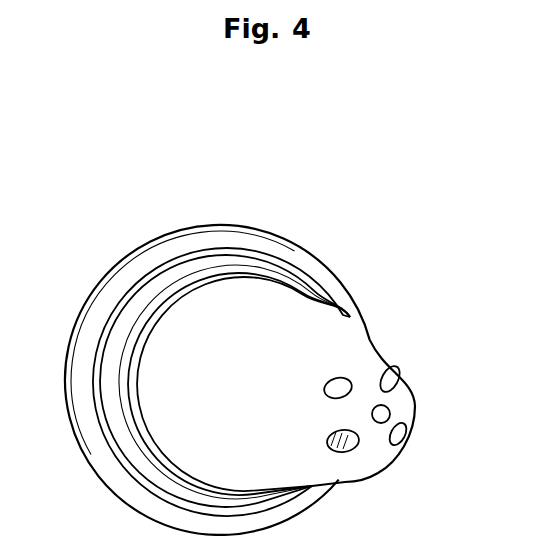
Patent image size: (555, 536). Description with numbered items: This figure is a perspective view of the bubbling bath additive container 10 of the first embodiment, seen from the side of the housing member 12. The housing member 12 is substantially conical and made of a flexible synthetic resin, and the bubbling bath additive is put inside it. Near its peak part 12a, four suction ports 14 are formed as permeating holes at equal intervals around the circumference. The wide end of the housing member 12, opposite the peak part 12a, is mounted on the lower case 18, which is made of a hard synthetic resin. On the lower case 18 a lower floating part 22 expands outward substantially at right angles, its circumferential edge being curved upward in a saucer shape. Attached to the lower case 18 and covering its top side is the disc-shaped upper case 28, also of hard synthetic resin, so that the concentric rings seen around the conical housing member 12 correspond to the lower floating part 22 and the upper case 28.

The bubbling bath additive container 10 is at (328, 180).
The housing member 12 is at (350, 347).
The peak part 12a is at (387, 411).
The suction ports 14 is at (390, 378).
The lower case 18 is at (333, 271).
The lower floating part 22 is at (232, 236).
The upper case 28 is at (116, 259).